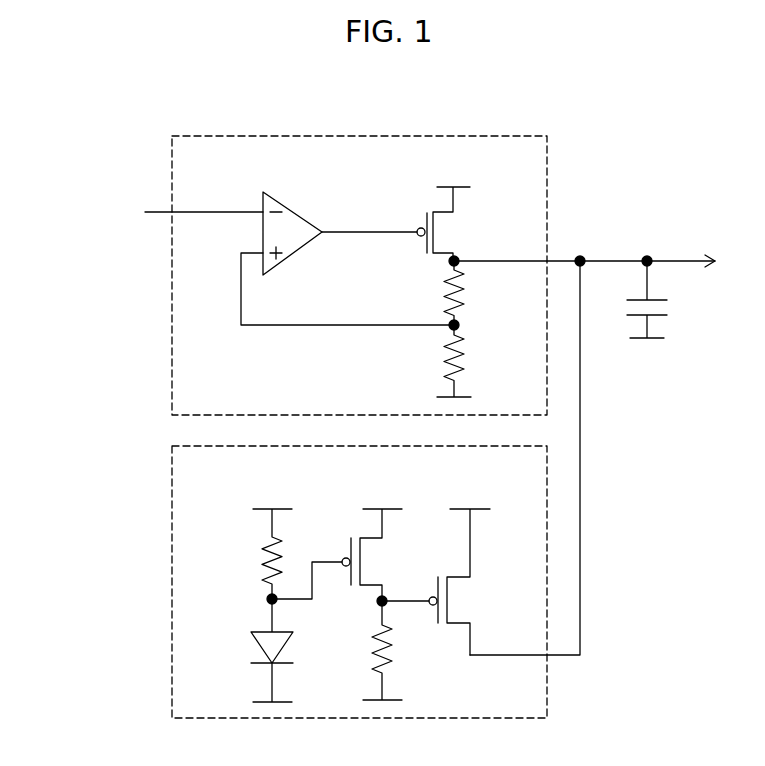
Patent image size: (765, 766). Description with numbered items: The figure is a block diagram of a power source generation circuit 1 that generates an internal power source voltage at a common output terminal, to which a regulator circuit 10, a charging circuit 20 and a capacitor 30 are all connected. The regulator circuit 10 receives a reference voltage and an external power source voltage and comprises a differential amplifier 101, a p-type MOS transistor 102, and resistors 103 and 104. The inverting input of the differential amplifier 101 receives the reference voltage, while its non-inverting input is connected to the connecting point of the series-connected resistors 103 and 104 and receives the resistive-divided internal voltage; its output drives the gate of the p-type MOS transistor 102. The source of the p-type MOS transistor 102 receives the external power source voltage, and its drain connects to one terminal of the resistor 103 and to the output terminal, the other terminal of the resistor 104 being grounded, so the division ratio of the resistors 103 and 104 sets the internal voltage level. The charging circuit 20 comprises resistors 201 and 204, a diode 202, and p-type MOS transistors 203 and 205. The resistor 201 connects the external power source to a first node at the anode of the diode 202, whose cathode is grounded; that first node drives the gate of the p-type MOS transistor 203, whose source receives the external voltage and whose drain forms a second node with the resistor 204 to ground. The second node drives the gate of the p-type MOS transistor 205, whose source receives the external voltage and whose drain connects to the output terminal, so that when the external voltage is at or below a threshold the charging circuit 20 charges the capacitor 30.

The power source generation circuit 1 is at (676, 133).
The regulator circuit 10 is at (172, 163).
The charging circuit 20 is at (172, 493).
The capacitor 30 is at (668, 310).
The differential amplifier 101 is at (295, 208).
The p-type MOS transistor 102 is at (457, 232).
The resistor 103 is at (462, 296).
The resistor 104 is at (462, 360).
The resistor 201 is at (259, 563).
The diode 202 is at (255, 644).
The p-type MOS transistor 203 is at (370, 566).
The resistor 204 is at (370, 648).
The p-type MOS transistor 205 is at (462, 601).